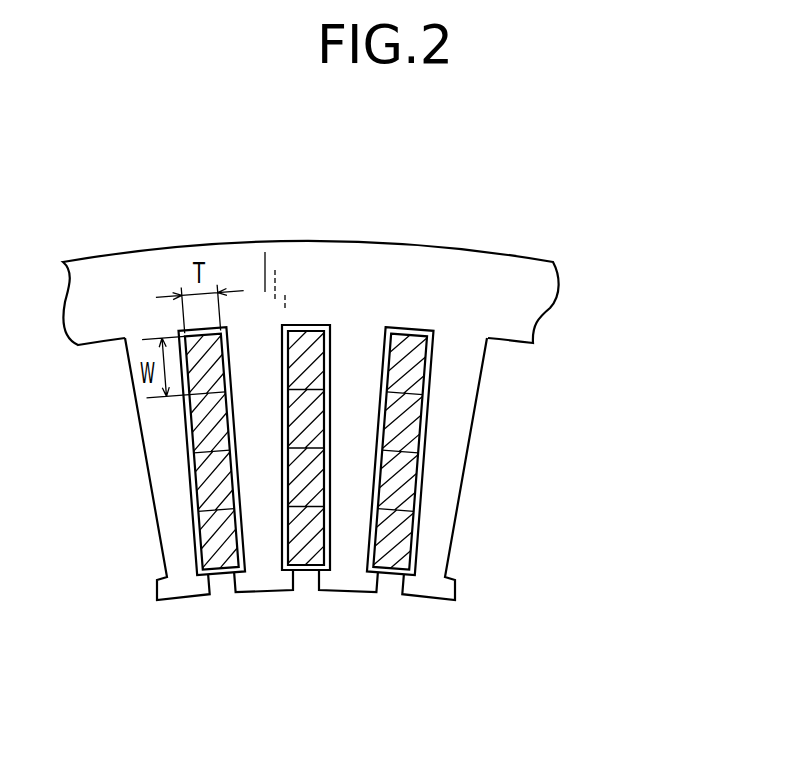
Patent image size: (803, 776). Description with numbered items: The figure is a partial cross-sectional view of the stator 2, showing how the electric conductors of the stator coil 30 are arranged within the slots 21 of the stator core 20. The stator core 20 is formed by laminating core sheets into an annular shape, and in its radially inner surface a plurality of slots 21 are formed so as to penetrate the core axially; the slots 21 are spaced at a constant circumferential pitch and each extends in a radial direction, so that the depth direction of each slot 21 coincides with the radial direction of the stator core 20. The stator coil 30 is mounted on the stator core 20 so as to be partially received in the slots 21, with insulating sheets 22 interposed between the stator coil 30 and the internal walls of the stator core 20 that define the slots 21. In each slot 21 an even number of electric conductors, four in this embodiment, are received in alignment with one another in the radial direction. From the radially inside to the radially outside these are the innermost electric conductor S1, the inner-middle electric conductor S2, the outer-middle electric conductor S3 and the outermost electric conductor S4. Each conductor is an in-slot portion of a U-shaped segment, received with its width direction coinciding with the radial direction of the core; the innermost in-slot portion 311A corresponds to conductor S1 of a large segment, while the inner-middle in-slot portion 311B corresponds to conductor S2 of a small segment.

The stator core segment 2 is at (570, 176).
The stator core 20 is at (305, 255).
The slot 21 is at (143, 453).
The insulating sheet 22 is at (303, 577).
The stator coil 30 is at (456, 465).
The outermost electric conductor S4 is at (413, 367).
The outer-middle electric conductor S3 is at (410, 425).
The inner-middle electric conductor S2 is at (426, 491).
The innermost electric conductor S1 is at (429, 552).
The inner-middle in-slot portion 311B is at (402, 473).
The innermost in-slot portion 311A is at (390, 530).